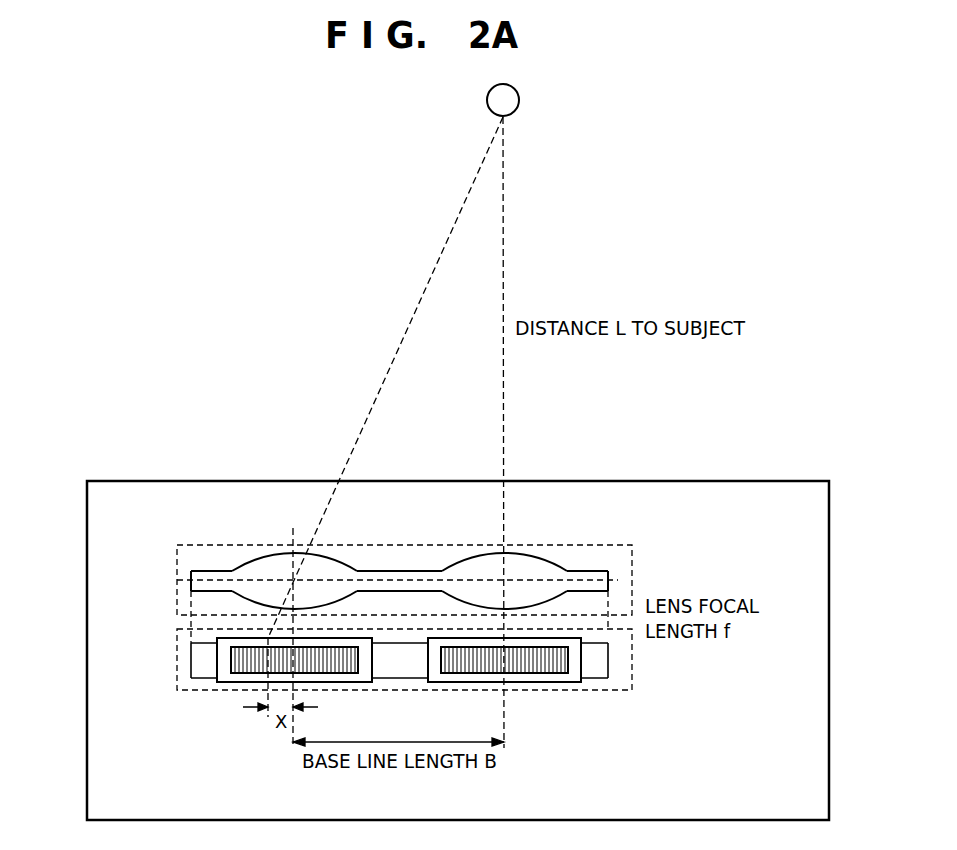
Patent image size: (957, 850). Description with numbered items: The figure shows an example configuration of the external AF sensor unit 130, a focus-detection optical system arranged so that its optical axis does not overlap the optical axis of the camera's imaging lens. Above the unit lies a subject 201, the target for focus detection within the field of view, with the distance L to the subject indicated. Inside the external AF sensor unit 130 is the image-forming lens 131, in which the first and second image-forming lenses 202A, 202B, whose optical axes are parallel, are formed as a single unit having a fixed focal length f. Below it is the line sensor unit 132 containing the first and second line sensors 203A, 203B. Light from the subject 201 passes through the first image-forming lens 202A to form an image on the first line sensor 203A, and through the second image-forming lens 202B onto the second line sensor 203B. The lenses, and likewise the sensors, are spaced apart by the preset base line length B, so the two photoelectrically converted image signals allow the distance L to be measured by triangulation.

The subject 201 is at (519, 100).
The external AF sensor unit 130 is at (711, 481).
The image-forming lens 131 is at (177, 553).
The line sensor unit 132 is at (177, 683).
The first image-forming lens 202A is at (340, 558).
The second image-forming lens 202B is at (578, 531).
The first line sensor 203A is at (355, 682).
The second line sensor 203B is at (567, 682).